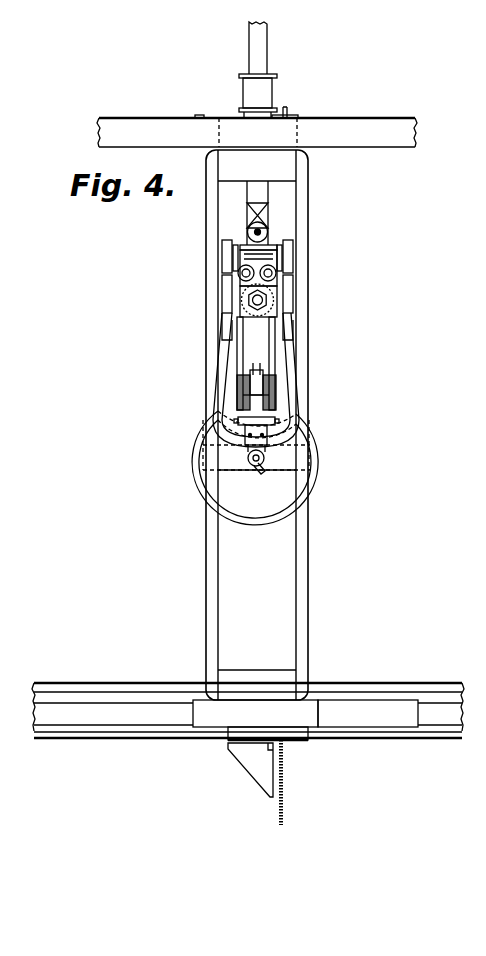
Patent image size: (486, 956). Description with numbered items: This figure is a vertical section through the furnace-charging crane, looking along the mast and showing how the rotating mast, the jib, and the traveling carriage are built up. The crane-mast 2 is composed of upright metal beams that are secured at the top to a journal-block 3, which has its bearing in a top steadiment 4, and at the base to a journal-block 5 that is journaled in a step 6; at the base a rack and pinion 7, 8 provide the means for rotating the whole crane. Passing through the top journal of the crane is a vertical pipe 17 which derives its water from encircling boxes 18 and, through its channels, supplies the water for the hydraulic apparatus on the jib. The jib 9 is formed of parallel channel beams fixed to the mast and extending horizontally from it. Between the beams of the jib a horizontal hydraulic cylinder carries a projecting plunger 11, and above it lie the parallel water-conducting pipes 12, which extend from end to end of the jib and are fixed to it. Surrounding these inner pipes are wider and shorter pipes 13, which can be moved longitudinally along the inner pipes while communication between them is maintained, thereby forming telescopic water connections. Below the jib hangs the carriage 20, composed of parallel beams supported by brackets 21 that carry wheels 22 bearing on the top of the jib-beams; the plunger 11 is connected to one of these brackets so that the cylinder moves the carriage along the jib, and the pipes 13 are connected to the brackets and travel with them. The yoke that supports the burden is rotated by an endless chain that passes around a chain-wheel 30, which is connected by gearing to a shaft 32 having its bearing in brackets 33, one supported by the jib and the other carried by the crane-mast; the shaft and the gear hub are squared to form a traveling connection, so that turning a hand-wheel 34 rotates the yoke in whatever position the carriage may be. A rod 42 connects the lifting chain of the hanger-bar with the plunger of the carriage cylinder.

The crane-mast 2 is at (305, 211).
The journal-block 3 is at (257, 170).
The top steadiment 4 is at (257, 131).
The journal-block 5 is at (257, 682).
The step 6 is at (270, 733).
The rack 7 is at (248, 711).
The pinion 8 is at (368, 713).
The jib 9 is at (233, 290).
The plunger 11 is at (252, 300).
The water-conducting pipes 12 is at (258, 256).
The outer pipes 13 is at (247, 263).
The vertical pipe 17 is at (259, 48).
The encircling boxes 18 is at (263, 96).
The carriage 20 is at (270, 345).
The brackets 21 is at (240, 346).
The wheels 22 is at (223, 243).
The chain-wheel 30 is at (279, 421).
The shaft 32 is at (254, 463).
The brackets 33 is at (278, 473).
The hand-wheel 34 is at (318, 459).
The rod 42 is at (260, 364).